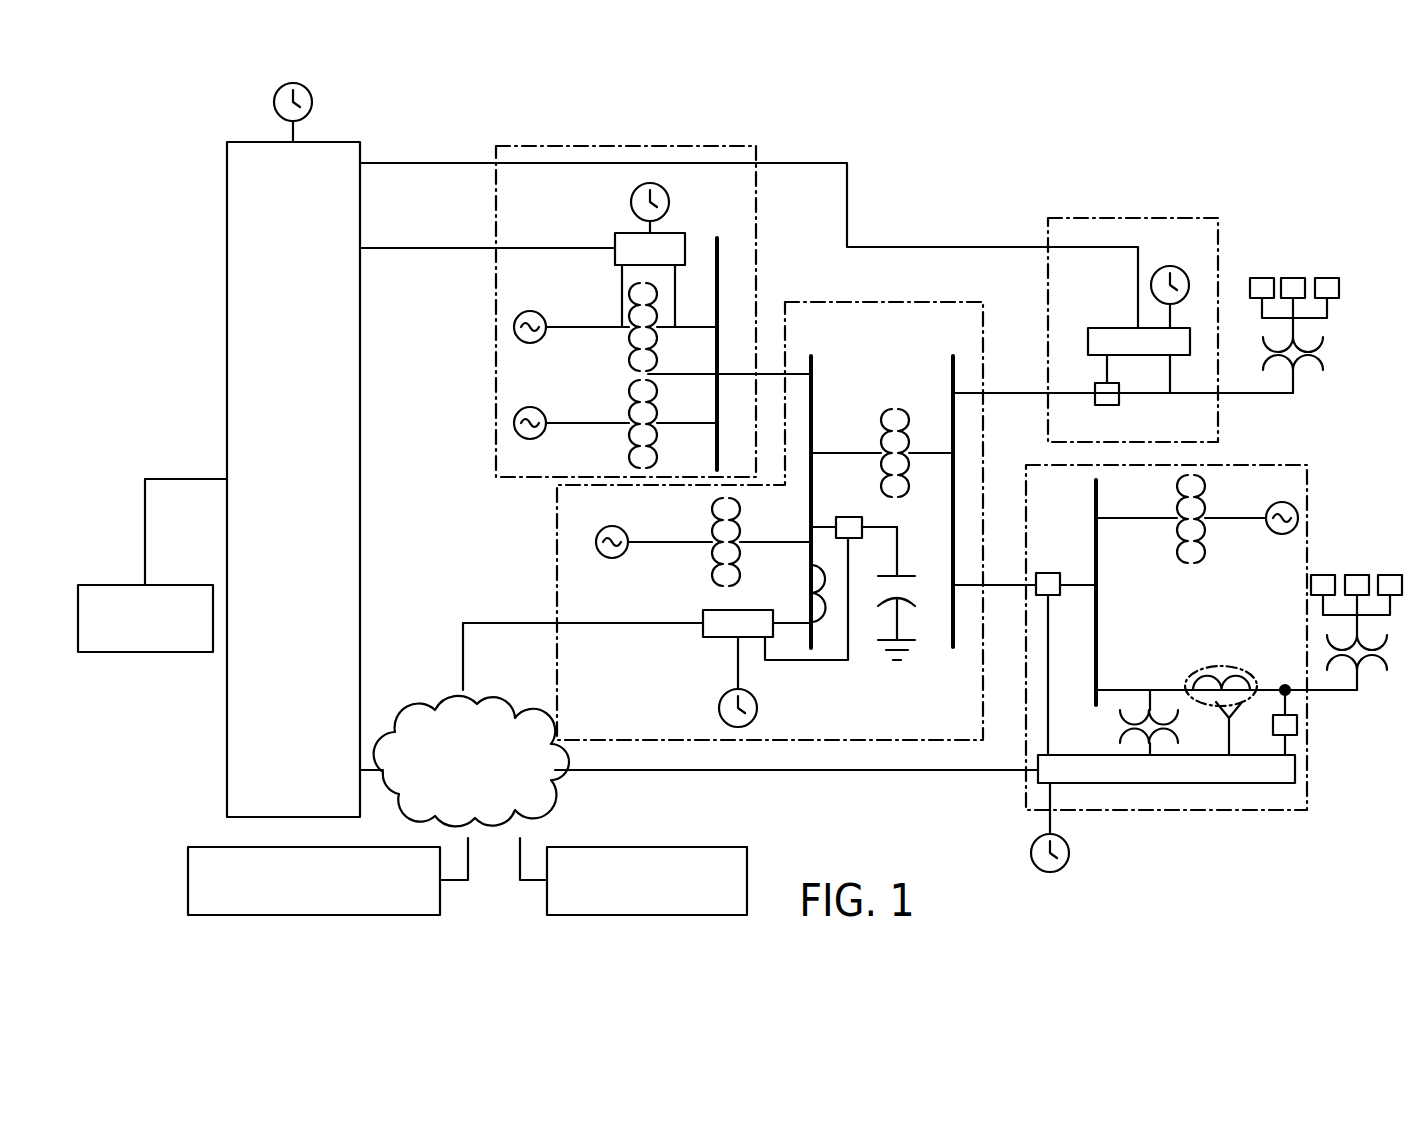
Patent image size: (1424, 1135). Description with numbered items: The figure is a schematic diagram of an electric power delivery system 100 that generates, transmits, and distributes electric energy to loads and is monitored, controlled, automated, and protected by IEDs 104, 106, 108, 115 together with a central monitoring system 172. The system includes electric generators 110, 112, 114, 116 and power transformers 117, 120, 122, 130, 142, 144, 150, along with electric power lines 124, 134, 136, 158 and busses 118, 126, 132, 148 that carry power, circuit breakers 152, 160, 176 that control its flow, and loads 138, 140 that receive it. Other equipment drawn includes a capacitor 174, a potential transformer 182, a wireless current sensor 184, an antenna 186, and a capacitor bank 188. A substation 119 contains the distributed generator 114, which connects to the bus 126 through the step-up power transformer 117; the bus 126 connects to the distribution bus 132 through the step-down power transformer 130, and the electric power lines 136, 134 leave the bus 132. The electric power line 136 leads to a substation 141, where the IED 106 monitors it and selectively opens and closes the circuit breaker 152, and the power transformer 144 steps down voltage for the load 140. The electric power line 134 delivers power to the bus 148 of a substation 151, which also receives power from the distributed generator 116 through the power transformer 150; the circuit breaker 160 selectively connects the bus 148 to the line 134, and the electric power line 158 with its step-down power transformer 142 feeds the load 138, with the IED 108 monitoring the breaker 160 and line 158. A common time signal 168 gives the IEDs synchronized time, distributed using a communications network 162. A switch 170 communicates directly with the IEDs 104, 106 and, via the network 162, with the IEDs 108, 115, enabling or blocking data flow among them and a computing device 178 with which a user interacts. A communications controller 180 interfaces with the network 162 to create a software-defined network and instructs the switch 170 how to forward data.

The electric power delivery system 100 is at (1302, 132).
The IED 104 is at (627, 233).
The IED 106 is at (1100, 328).
The IED 108 is at (1220, 783).
The electric generator 110 is at (530, 311).
The electric generator 112 is at (530, 407).
The electric generator 114 is at (612, 526).
The IED 115 is at (740, 610).
The electric generator 116 is at (1270, 535).
The power transformer 117 is at (714, 574).
The bus 118 is at (720, 240).
The substation 119 is at (557, 572).
The power transformer 120 is at (630, 358).
The power transformer 122 is at (630, 455).
The electric power line 124 is at (770, 374).
The bus 126 is at (815, 383).
The power transformer 130 is at (890, 408).
The bus 132 is at (953, 630).
The electric power line 134 is at (993, 588).
The electric power line 136 is at (1075, 396).
The load 138 is at (1357, 575).
The load 140 is at (1330, 278).
The substation 141 is at (1070, 218).
The power transformer 142 is at (1385, 657).
The power transformer 144 is at (1322, 355).
The bus 148 is at (1096, 480).
The power transformer 150 is at (1200, 466).
The substation 151 is at (1285, 810).
The circuit breaker 152 is at (1105, 405).
The electric power line 158 is at (1330, 695).
The circuit breaker 160 is at (1058, 573).
The communications network 162 is at (415, 705).
The common time signal 168 is at (312, 102).
The switch 170 is at (360, 476).
The central monitoring system 172 is at (188, 872).
The capacitor 174 is at (903, 572).
The circuit breaker 176 is at (845, 517).
The computing device 178 is at (140, 652).
The communications controller 180 is at (630, 847).
The potential transformer 182 is at (1118, 727).
The wireless current sensor 184 is at (1220, 666).
The antenna 186 is at (1234, 718).
The capacitor bank 188 is at (1298, 725).